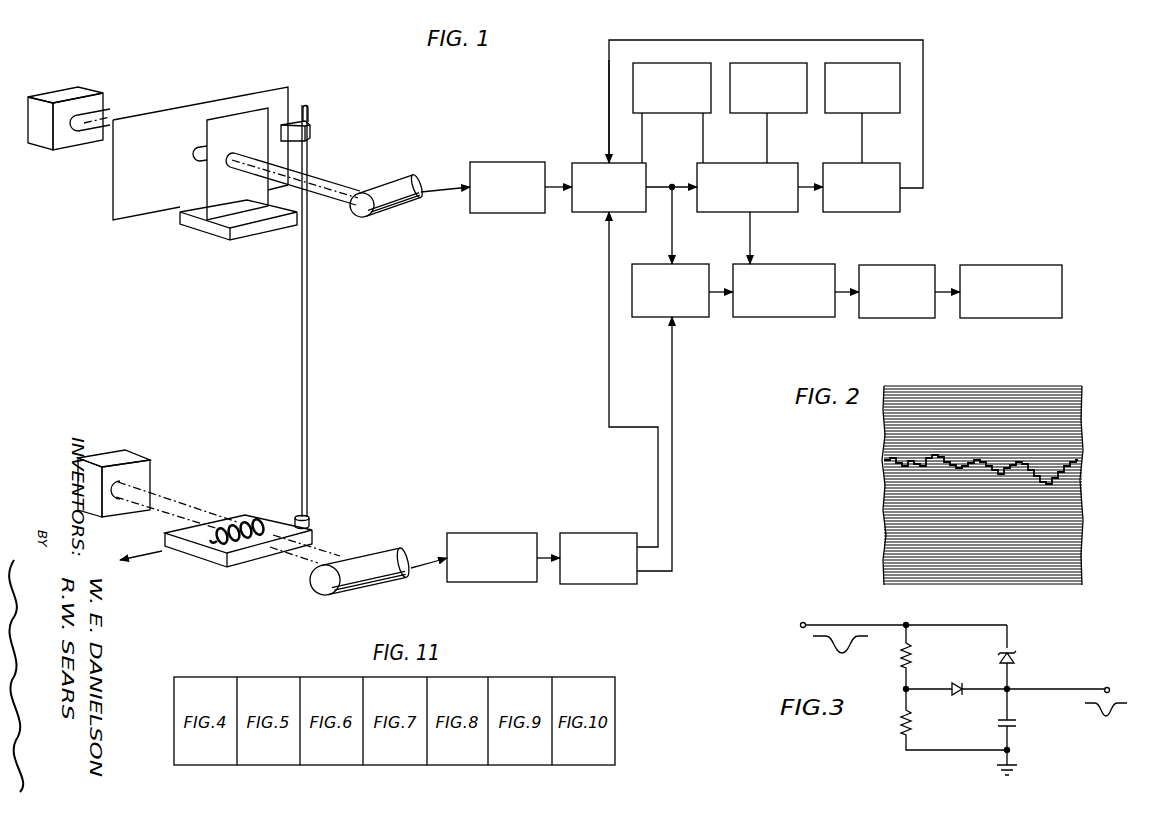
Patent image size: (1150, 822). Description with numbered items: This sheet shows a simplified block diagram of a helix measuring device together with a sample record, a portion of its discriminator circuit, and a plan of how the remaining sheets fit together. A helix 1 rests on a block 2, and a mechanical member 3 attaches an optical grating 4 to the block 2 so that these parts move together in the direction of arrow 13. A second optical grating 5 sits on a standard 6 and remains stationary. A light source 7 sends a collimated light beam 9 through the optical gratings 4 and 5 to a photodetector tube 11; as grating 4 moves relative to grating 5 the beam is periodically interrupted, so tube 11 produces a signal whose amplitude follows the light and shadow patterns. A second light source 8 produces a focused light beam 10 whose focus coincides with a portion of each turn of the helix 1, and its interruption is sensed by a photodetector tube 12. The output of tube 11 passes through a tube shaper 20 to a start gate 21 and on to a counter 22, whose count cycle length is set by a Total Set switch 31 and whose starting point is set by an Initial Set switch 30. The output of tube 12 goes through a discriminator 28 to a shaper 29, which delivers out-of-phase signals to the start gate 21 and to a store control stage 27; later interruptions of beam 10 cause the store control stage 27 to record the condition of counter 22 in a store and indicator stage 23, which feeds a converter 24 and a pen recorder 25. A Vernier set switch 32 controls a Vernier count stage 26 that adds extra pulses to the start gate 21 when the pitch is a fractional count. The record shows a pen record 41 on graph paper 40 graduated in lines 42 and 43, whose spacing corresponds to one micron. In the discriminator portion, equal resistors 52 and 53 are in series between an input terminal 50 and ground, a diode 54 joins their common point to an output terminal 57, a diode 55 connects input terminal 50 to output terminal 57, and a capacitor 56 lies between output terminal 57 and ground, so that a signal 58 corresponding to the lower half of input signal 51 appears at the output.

In FIG. 1, the helix 1 is at (250, 518).
In FIG. 1, the block 2 is at (215, 557).
In FIG. 1, the mechanical member 3 is at (309, 348).
In FIG. 1, the optical grating 4 is at (177, 118).
In FIG. 1, the second optical grating 5 is at (243, 118).
In FIG. 1, the standard 6 is at (228, 230).
In FIG. 1, the light source 7 is at (80, 90).
In FIG. 1, the light source 8 is at (126, 450).
In FIG. 1, the collimated light beam 9 is at (108, 118).
In FIG. 1, the focused light beam 10 is at (183, 497).
In FIG. 1, the photodetector tube 11 is at (397, 185).
In FIG. 1, the photodetector tube 12 is at (373, 553).
In FIG. 1, the arrow 13 is at (141, 566).
In FIG. 1, the tube shaper 20 is at (497, 162).
In FIG. 1, the start gate 21 is at (595, 161).
In FIG. 1, the counter 22 is at (722, 165).
In FIG. 1, the store and indicator stage 23 is at (770, 265).
In FIG. 1, the converter 24 is at (890, 265).
In FIG. 1, the pen recorder 25 is at (996, 265).
In FIG. 1, the Vernier count stage 26 is at (873, 165).
In FIG. 1, the store control stage 27 is at (687, 265).
In FIG. 1, the discriminator 28 is at (485, 533).
In FIG. 1, the shaper 29 is at (592, 533).
In FIG. 1, the Initial Set switch 30 is at (668, 63).
In FIG. 1, the Total Set switch 31 is at (765, 63).
In FIG. 1, the Vernier set switch 32 is at (857, 63).
In FIG. 2, the graph paper 40 is at (1028, 386).
In FIG. 2, the pen record 41 is at (1072, 460).
In FIG. 2, the line 42 is at (910, 470).
In FIG. 2, the line 43 is at (910, 465).
In FIG. 3, the input terminal 50 is at (803, 622).
In FIG. 3, the signal 51 is at (840, 656).
In FIG. 3, the resistor 52 is at (912, 656).
In FIG. 3, the resistor 53 is at (912, 727).
In FIG. 3, the diode 54 is at (955, 682).
In FIG. 3, the diode 55 is at (1013, 658).
In FIG. 3, the capacitor 56 is at (1016, 722).
In FIG. 3, the output terminal 57 is at (1108, 687).
In FIG. 3, the signal 58 is at (1109, 720).